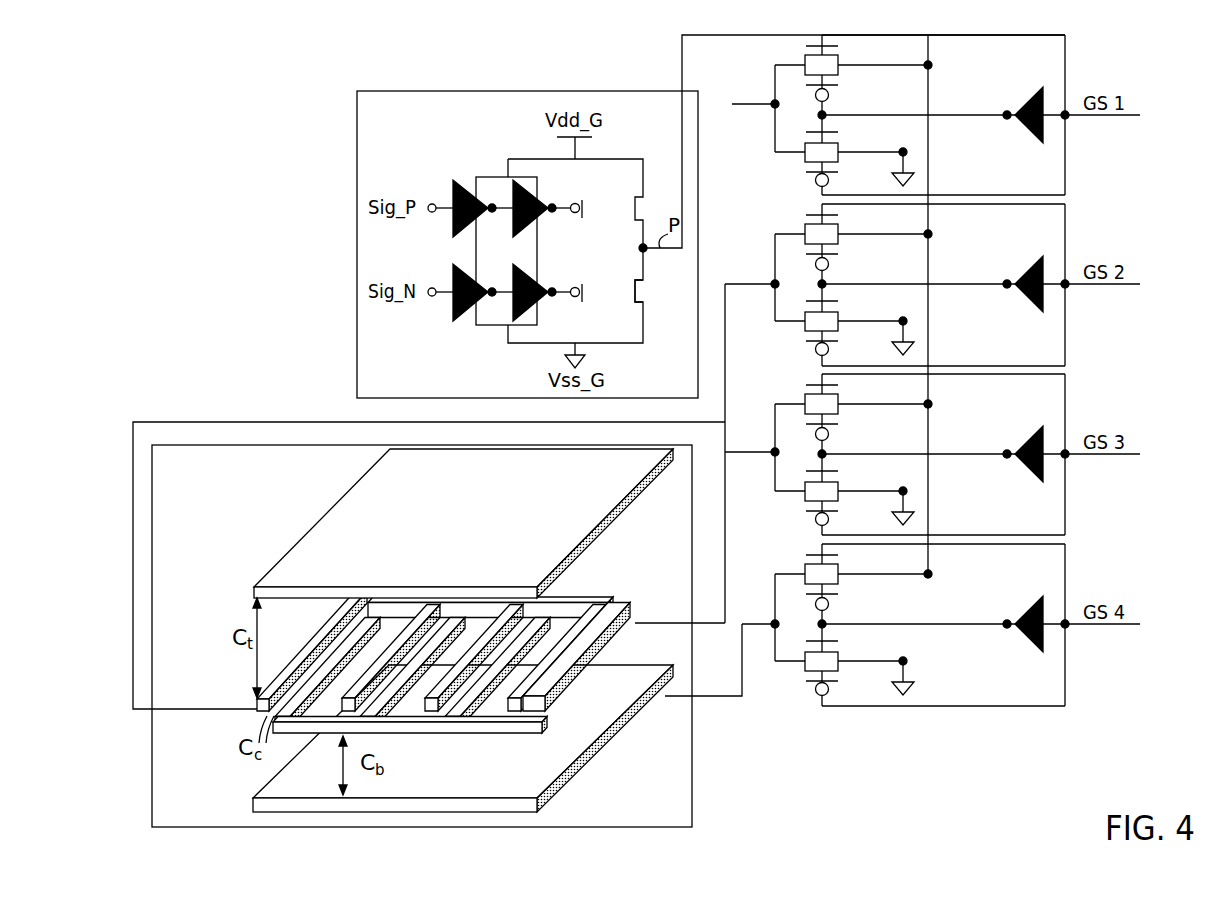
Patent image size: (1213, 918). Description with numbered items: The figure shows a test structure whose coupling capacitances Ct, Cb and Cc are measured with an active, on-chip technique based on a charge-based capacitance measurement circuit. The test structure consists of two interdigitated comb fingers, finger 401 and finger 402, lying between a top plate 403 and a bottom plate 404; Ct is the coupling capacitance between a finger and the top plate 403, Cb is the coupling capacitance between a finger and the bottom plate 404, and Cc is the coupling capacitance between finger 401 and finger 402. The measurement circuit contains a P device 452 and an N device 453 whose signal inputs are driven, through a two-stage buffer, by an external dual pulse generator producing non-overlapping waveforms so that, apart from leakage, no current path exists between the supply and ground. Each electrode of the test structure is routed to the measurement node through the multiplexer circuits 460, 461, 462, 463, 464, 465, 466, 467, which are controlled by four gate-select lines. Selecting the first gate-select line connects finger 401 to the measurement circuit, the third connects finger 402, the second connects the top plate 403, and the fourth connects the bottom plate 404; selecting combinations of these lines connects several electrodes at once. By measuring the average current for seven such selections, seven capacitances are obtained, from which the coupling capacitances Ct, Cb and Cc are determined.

The finger 401 is at (258, 712).
The finger 402 is at (635, 622).
The top plate 403 is at (484, 513).
The bottom plate 404 is at (449, 771).
The P device 452 is at (577, 203).
The N device 453 is at (641, 294).
The multiplexer circuit 460 is at (804, 58).
The multiplexer circuit 461 is at (806, 155).
The multiplexer circuit 462 is at (864, 241).
The multiplexer circuit 463 is at (864, 329).
The multiplexer circuit 464 is at (864, 411).
The multiplexer circuit 465 is at (864, 499).
The multiplexer circuit 466 is at (864, 581).
The multiplexer circuit 467 is at (864, 669).